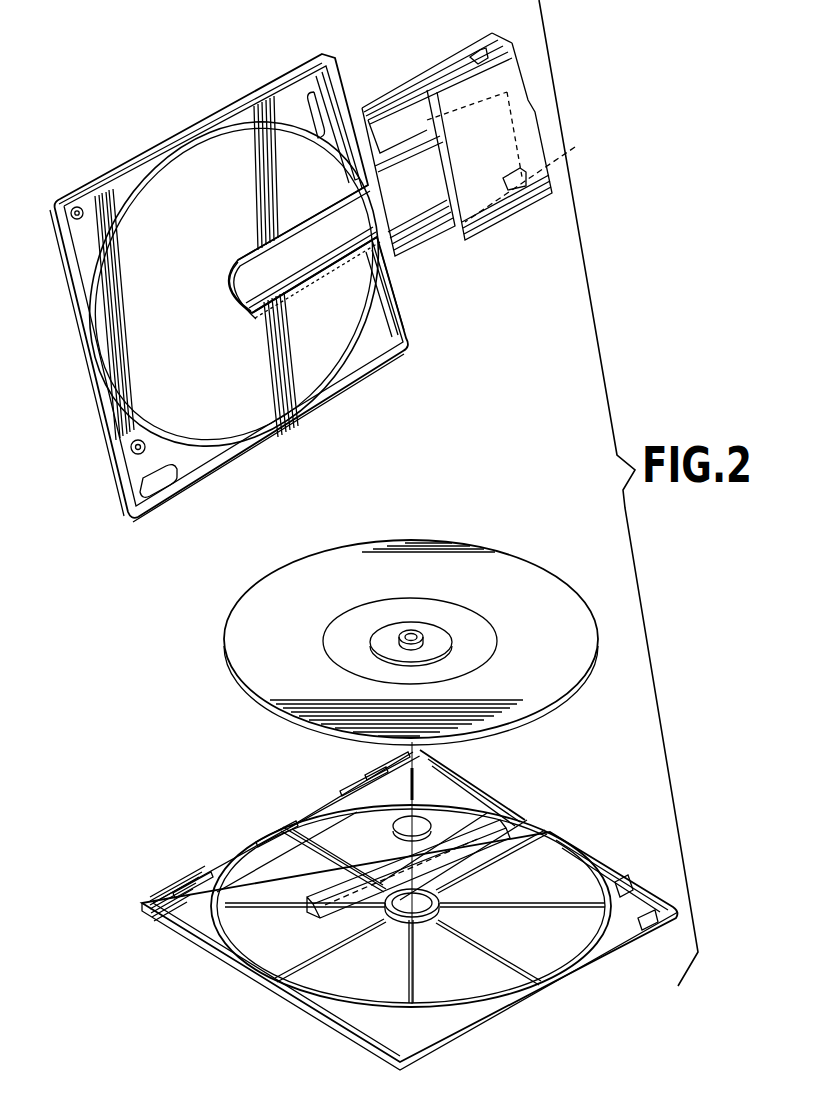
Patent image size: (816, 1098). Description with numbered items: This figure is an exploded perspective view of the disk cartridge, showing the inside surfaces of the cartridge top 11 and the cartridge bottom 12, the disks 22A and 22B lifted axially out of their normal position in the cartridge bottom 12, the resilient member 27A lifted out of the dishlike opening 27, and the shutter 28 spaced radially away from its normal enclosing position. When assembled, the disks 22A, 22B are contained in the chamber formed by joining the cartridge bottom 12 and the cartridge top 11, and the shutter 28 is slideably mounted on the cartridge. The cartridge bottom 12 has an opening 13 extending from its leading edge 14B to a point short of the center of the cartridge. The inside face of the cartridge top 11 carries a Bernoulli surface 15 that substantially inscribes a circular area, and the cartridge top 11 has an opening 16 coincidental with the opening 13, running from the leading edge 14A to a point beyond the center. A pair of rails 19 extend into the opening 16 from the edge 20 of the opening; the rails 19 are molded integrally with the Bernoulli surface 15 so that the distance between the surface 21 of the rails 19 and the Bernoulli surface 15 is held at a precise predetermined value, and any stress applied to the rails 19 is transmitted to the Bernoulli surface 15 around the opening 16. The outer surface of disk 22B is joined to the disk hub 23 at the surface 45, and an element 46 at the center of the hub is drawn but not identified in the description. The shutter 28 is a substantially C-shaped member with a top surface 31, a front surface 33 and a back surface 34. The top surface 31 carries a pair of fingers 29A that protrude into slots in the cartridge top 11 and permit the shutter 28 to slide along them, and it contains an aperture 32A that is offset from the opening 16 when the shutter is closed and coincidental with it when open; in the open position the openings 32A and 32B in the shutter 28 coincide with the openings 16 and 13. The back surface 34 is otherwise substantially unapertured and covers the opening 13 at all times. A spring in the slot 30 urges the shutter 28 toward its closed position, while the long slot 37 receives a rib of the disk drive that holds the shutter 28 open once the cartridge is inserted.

The cartridge top 11 is at (83, 309).
The cartridge bottom 12 is at (270, 992).
The opening 13 is at (535, 832).
The leading edge 14A is at (404, 324).
The leading edge 14B is at (500, 806).
The Bernoulli surface 15 is at (201, 158).
The opening 16 is at (243, 282).
The rails 19 is at (330, 262).
The edge of the opening 20 is at (302, 287).
The surface of rails 21 is at (367, 242).
The disk 22A is at (498, 562).
The disk 22B is at (518, 716).
The disk hub 23 is at (430, 640).
The dishlike opening 27 is at (422, 912).
The resilient member 27A is at (393, 826).
The shutter 28 is at (446, 232).
The fingers 29A is at (478, 55).
The slot 30 is at (317, 78).
The top surface 31 is at (412, 78).
The aperture 32A is at (395, 128).
The opening 32B is at (525, 85).
The front surface 33 is at (492, 33).
The back surface 34 is at (520, 210).
The long slot 37 is at (322, 879).
The surface 45 is at (391, 623).
The center nut 46 is at (410, 632).